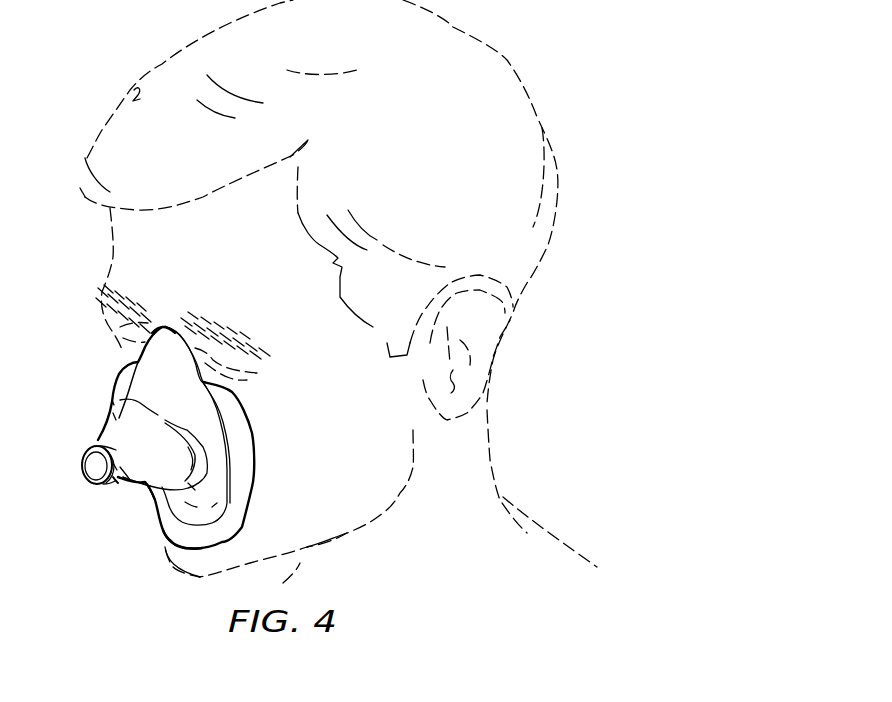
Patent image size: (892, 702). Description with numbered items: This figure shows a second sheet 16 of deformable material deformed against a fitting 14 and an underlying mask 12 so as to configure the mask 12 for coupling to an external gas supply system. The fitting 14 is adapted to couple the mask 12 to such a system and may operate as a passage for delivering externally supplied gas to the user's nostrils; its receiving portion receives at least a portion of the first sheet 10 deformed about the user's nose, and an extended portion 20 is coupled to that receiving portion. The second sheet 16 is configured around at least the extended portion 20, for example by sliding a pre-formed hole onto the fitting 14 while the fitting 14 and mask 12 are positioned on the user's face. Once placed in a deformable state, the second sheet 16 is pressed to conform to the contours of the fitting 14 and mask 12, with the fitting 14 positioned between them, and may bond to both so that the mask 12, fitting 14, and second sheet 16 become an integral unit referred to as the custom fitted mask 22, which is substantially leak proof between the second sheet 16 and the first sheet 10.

The first sheet 10 is at (243, 447).
The mask 12 is at (265, 482).
The fitting 14 is at (170, 344).
The second sheet 16 is at (85, 437).
The extended portion 20 is at (117, 483).
The custom fitted mask 22 is at (135, 502).